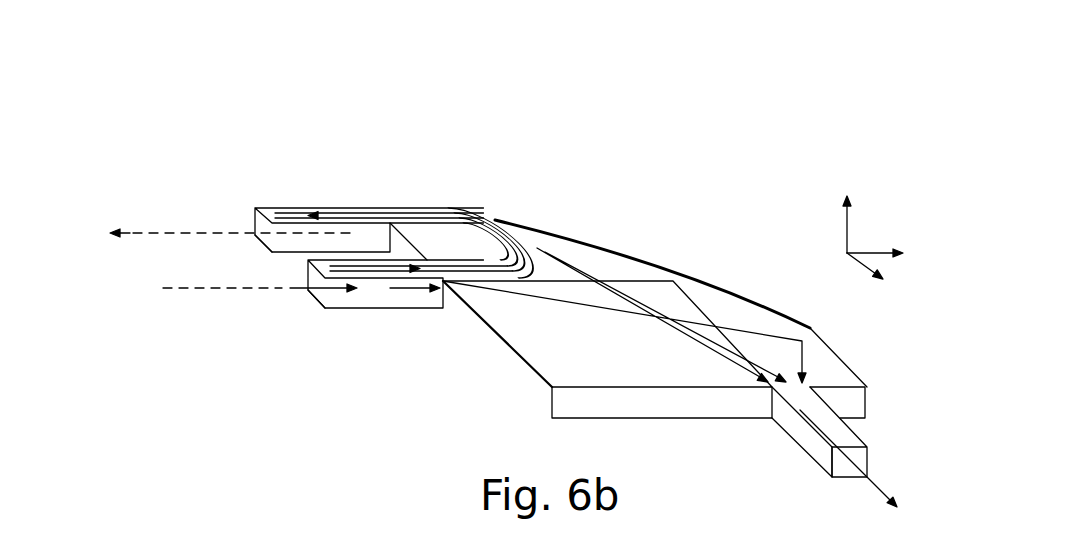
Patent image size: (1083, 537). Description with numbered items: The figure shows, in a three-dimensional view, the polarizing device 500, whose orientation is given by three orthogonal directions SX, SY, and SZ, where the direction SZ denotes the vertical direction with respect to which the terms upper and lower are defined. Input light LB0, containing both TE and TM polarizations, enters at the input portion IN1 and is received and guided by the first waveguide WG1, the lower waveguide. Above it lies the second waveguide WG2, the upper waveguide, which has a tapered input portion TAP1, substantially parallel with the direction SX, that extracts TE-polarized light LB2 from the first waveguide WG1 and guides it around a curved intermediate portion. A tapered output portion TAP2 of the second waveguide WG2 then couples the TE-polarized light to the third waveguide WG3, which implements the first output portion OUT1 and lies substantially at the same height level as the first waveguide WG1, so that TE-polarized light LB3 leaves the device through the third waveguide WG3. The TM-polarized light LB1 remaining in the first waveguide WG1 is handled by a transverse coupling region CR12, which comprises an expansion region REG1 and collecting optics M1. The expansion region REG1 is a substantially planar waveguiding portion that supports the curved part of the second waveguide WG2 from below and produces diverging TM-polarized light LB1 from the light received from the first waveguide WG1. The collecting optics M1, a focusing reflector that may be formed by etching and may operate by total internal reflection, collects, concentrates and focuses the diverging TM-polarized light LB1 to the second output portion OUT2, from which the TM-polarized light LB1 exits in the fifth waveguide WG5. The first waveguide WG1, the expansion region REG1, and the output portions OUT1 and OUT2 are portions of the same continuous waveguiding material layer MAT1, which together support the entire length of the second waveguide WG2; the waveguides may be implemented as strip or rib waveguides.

The polarizing device 500 is at (222, 112).
The TE-polarized light in the third waveguide LB3 is at (148, 232).
The third waveguide WG3 is at (265, 208).
The first output portion OUT1 is at (270, 250).
The input portion IN1 is at (316, 292).
The input light LB0 is at (178, 289).
The first waveguide WG1 is at (345, 309).
The waveguiding material layer MAT1 is at (441, 242).
The tapered output portion TAP2 is at (338, 208).
The tapered input portion TAP1 is at (366, 262).
The TE-polarized light LB2 is at (423, 213).
The expansion region REG1 is at (473, 242).
The second waveguide WG2 is at (495, 218).
The transverse coupling region CR12 is at (782, 199).
The collecting optics M1 is at (660, 266).
The TM-polarized light LB1 is at (553, 293).
The fifth waveguide WG5 is at (800, 440).
The second output portion OUT2 is at (828, 463).
The direction SX is at (894, 256).
The direction SY is at (879, 280).
The direction SZ is at (844, 210).